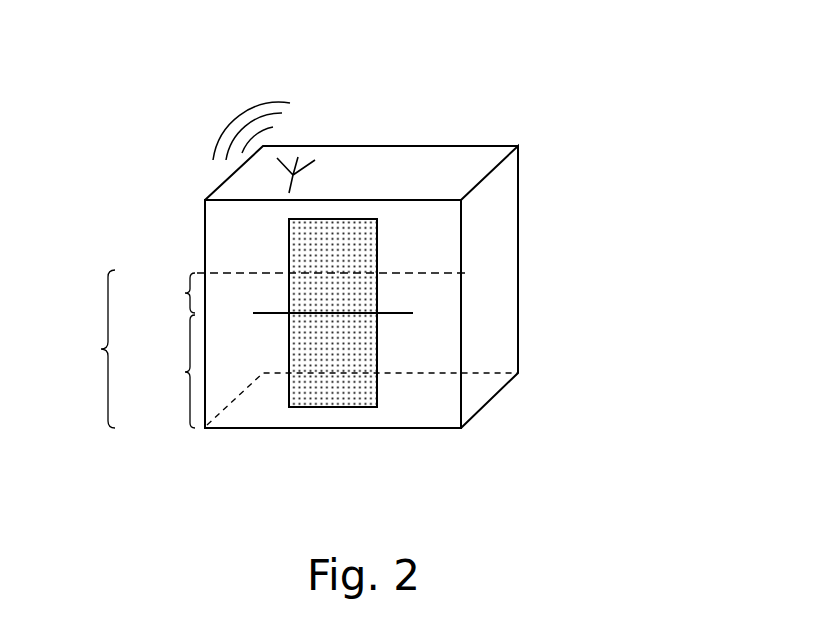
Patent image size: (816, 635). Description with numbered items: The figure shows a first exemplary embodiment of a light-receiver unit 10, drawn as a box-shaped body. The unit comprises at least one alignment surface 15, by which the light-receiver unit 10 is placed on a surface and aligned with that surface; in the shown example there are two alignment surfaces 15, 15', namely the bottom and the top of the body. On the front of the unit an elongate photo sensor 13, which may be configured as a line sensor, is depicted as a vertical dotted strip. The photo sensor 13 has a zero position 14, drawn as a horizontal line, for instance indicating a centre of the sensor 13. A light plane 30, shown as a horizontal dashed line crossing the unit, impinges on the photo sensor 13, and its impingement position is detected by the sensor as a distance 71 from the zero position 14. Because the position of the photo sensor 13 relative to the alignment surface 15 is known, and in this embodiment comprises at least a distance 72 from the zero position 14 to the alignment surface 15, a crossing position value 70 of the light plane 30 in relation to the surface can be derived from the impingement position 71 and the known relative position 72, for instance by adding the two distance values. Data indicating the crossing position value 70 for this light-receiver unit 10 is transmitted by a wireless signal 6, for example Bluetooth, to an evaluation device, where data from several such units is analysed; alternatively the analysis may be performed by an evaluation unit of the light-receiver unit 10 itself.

The wireless signal 6 is at (231, 93).
The light-receiver unit 10 is at (488, 126).
The elongate photo sensor 13 is at (297, 251).
The zero position 14 is at (403, 313).
The alignment surface 15 is at (362, 428).
The alignment surface 15' is at (320, 170).
The light plane 30 is at (438, 273).
The crossing position value 70 is at (88, 349).
The distance from the zero position (impingement position) 71 is at (172, 293).
The distance from the zero position to the alignment surface (relative position) 72 is at (172, 371).